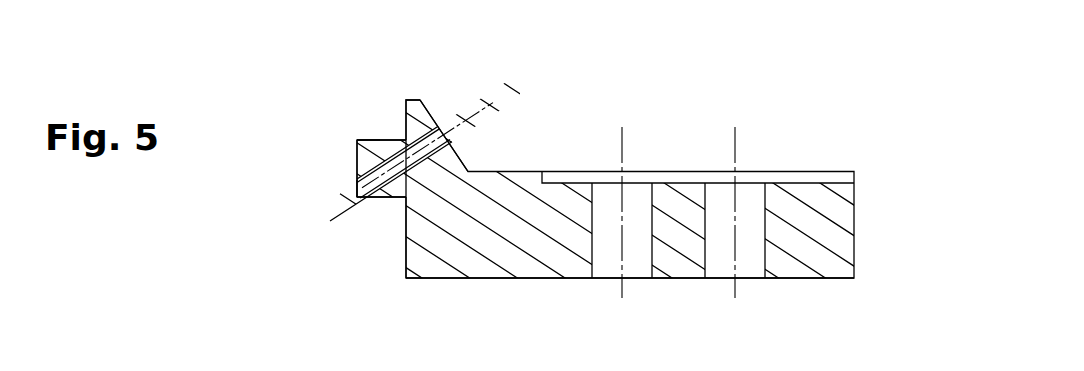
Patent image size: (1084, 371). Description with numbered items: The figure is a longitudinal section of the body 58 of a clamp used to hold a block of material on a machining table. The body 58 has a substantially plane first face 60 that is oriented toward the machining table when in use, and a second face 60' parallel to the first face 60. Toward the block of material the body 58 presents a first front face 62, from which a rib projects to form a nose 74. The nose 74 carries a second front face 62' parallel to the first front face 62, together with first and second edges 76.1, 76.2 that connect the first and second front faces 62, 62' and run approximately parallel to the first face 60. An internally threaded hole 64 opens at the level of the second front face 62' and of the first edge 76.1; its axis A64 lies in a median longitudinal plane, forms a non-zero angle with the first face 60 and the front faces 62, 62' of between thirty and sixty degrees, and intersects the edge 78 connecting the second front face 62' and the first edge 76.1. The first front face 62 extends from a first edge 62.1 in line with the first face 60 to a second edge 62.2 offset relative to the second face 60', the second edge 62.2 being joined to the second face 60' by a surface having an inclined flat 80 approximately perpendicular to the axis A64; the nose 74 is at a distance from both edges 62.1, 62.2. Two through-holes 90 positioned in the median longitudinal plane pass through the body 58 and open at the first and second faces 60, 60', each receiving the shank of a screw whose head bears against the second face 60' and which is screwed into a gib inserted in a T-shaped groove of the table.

The body 58 is at (846, 157).
The first face 60 is at (623, 185).
The second face 60' is at (698, 134).
The first front face 62 is at (356, 224).
The second front face 62' is at (303, 154).
The first edge 62.1 is at (406, 278).
The second edge 62.2 is at (404, 98).
The internally threaded hole 64 is at (359, 183).
The axis A64 is at (477, 112).
The nose 74 is at (360, 140).
The first edge 76.1 is at (395, 197).
The second edge 76.2 is at (392, 140).
The edge 78 is at (342, 212).
The inclined flat 80 is at (462, 140).
The through-hole 90 is at (717, 212).